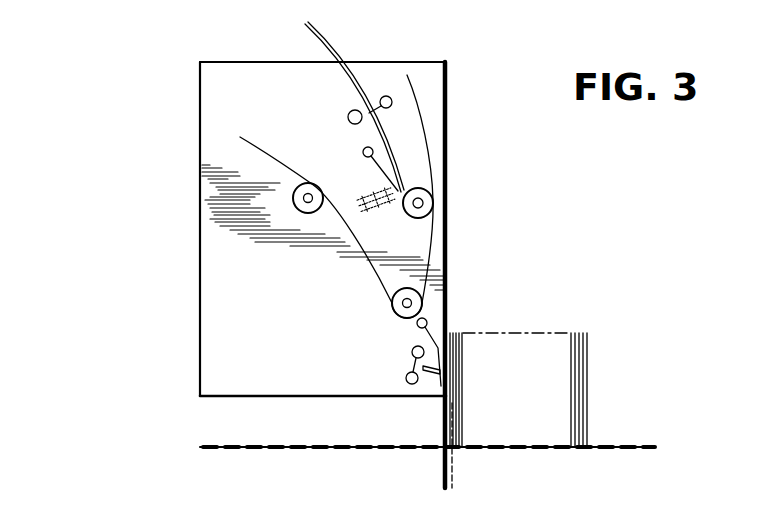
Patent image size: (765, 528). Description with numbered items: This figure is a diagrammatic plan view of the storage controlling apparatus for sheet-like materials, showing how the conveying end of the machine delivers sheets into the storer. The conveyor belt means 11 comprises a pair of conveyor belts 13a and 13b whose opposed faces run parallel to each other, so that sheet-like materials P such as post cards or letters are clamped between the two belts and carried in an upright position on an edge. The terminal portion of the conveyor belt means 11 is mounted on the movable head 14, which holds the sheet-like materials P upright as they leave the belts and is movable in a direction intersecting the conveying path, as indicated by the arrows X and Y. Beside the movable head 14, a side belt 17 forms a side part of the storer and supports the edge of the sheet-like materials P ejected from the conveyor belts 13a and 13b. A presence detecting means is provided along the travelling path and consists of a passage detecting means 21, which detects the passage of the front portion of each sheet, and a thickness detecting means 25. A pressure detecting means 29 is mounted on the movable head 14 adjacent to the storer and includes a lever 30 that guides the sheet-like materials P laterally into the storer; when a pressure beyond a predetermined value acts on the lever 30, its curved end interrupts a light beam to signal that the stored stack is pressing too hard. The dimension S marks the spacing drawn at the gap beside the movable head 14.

The conveyor belt means 11 is at (357, 75).
The conveyor belt 13a is at (357, 252).
The conveyor belt 13b is at (427, 136).
The movable head 14 is at (211, 343).
The side belt 17 is at (361, 444).
The passage detecting means 21 is at (348, 117).
The thickness detecting means 25 is at (363, 152).
The pressure detecting means 29 is at (411, 366).
The lever 30 is at (417, 326).
The sheet-like materials P is at (586, 359).
The gap spacing S is at (503, 475).
The arrow X is at (36, 236).
The arrow Y is at (604, 241).